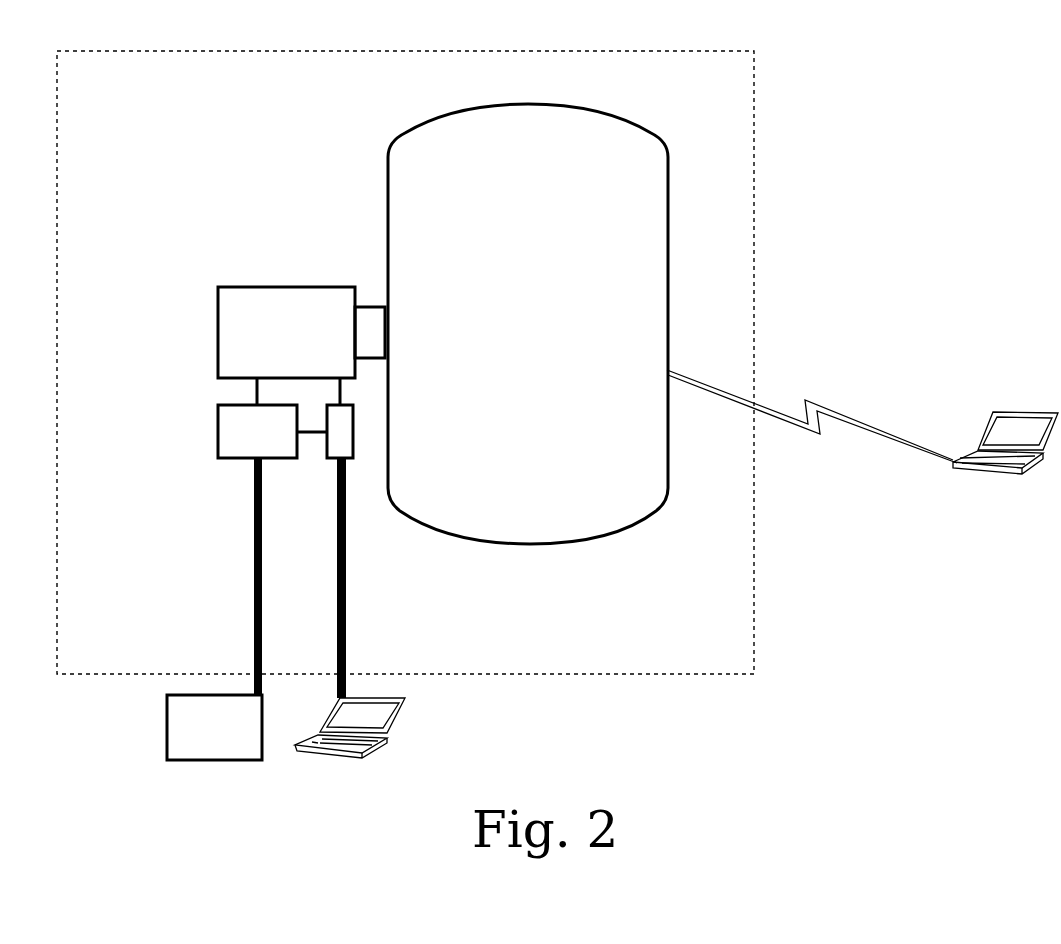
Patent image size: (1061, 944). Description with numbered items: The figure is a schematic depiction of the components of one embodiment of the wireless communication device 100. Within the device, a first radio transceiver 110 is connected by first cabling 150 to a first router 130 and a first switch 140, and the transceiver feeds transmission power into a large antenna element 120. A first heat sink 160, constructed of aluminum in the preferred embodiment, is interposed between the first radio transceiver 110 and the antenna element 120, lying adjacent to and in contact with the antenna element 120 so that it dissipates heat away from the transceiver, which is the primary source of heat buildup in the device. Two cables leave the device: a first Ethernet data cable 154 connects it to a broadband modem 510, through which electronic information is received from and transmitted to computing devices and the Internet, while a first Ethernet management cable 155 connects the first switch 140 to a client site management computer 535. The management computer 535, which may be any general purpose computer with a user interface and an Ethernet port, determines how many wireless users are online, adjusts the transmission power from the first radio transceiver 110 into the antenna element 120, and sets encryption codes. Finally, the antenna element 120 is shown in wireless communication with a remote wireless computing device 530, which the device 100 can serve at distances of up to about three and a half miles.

The wireless communication device 100 is at (771, 212).
The first radio transceiver 110 is at (217, 332).
The antenna element 120 is at (530, 546).
The first router 130 is at (217, 431).
The first switch 140 is at (354, 462).
The first cabling 150 is at (254, 389).
The first Ethernet data cable 154 is at (254, 545).
The first Ethernet management cable 155 is at (347, 605).
The first heat sink 160 is at (372, 305).
The broadband modem 510 is at (166, 727).
The wireless computing device 530 is at (862, 436).
The client site management computer 535 is at (350, 741).